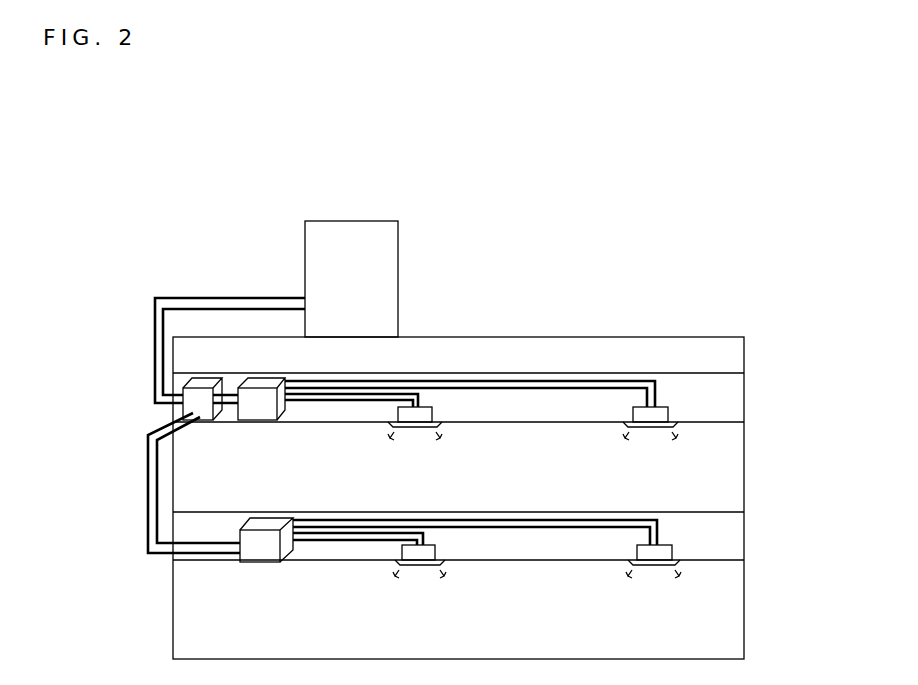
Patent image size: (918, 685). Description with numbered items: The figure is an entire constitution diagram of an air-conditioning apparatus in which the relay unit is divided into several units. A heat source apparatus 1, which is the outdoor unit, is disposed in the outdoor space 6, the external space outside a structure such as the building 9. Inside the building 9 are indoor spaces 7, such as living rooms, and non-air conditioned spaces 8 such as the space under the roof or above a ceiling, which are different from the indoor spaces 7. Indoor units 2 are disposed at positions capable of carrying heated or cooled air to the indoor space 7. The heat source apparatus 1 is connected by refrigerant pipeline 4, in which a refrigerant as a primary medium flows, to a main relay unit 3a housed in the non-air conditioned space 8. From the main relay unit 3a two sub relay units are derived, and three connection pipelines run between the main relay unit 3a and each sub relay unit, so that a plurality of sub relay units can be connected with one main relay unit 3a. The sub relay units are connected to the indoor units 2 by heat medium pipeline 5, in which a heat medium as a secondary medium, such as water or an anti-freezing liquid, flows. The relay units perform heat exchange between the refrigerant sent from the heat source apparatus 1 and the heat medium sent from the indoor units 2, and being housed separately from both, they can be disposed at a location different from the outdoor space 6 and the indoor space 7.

The heat source apparatus 1 is at (399, 262).
The indoor unit 2 is at (663, 404).
The main relay unit 3a is at (202, 385).
The refrigerant pipeline 4 is at (172, 296).
The heat medium pipeline 5 is at (493, 380).
The outdoor space 6 is at (632, 243).
The indoor space 7 is at (697, 473).
The non-air conditioned space 8 is at (710, 398).
The building 9 is at (728, 336).